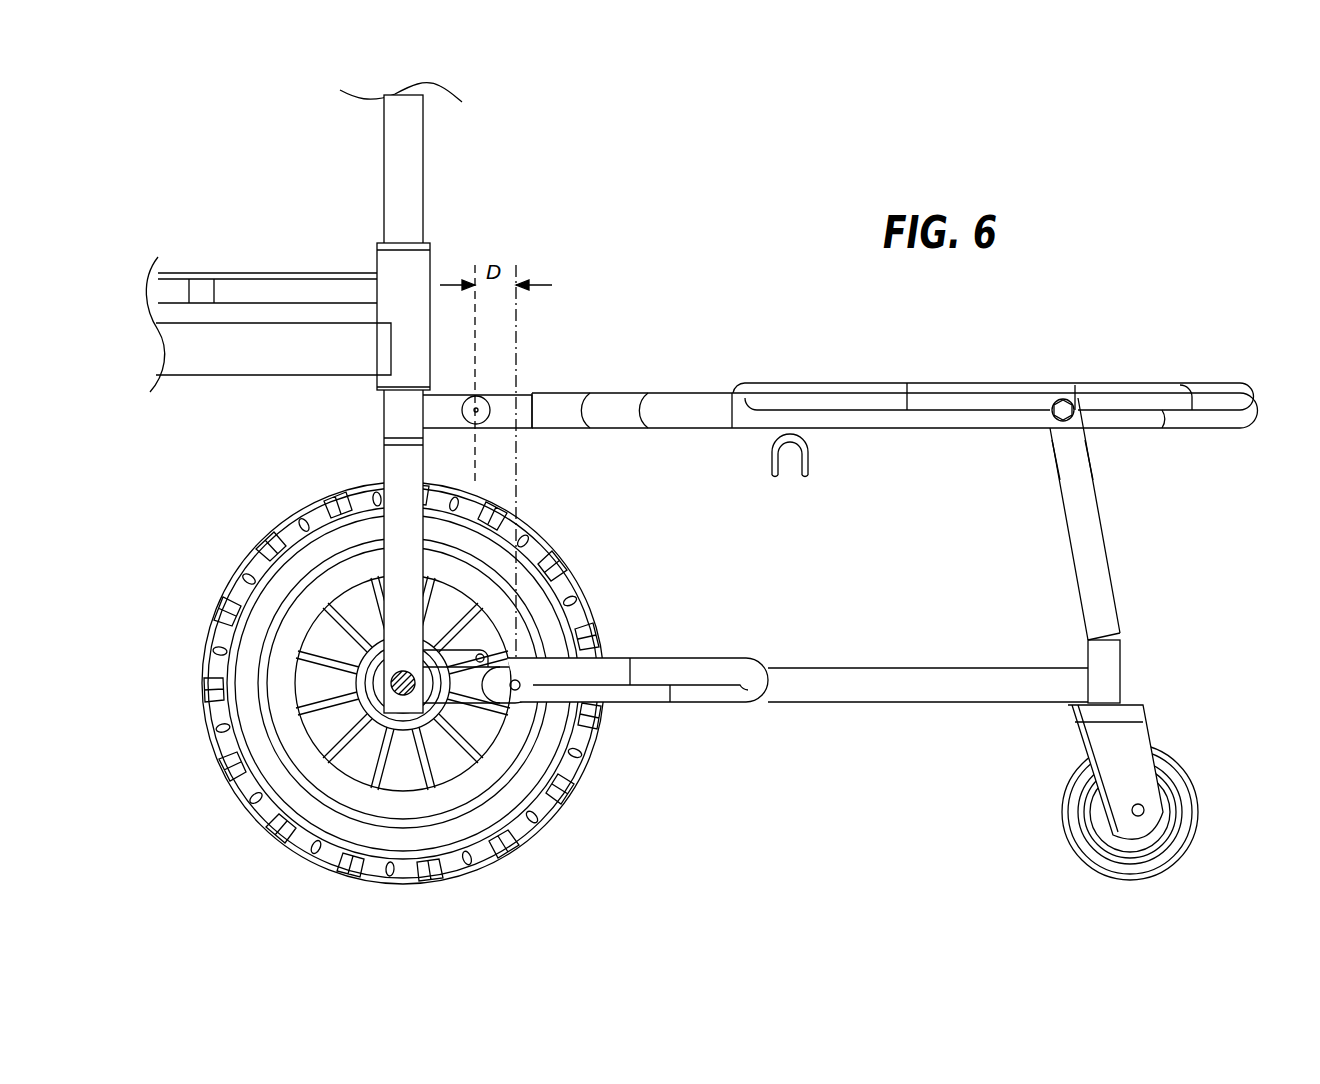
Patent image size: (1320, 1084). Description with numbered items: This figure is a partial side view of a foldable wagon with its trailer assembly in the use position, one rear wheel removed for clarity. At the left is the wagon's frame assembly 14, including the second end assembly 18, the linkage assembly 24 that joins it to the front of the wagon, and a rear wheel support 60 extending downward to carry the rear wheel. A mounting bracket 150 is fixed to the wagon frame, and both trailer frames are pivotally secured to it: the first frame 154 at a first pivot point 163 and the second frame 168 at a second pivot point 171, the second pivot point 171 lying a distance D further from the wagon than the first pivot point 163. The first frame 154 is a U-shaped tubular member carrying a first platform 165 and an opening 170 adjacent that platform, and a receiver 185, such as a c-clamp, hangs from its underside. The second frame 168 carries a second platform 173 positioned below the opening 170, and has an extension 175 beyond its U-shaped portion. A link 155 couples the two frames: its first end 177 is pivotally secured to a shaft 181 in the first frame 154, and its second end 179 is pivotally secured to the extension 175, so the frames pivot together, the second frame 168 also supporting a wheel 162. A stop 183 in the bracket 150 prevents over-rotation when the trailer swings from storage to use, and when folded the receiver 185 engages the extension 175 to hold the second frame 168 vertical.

The frame assembly 14 is at (388, 260).
The second end assembly 18 is at (417, 259).
The linkage assembly 24 is at (205, 360).
The rear wheel supports 60 is at (400, 549).
The mounting bracket 150 is at (442, 410).
The first frame 154 is at (703, 397).
The link 155 is at (1098, 560).
The wheel 162 is at (1168, 753).
The first pivot point 163 is at (482, 408).
The first platform 165 is at (973, 393).
The second frame 168 is at (638, 690).
The opening 170 is at (651, 365).
The second pivot point 171 is at (515, 690).
The second platform 173 is at (708, 667).
The extension 175 is at (843, 682).
The first end of link 177 is at (1078, 468).
The second end of link 179 is at (1108, 675).
The shaft 181 is at (1057, 417).
The stop 183 is at (482, 655).
The receiver 185 is at (810, 453).